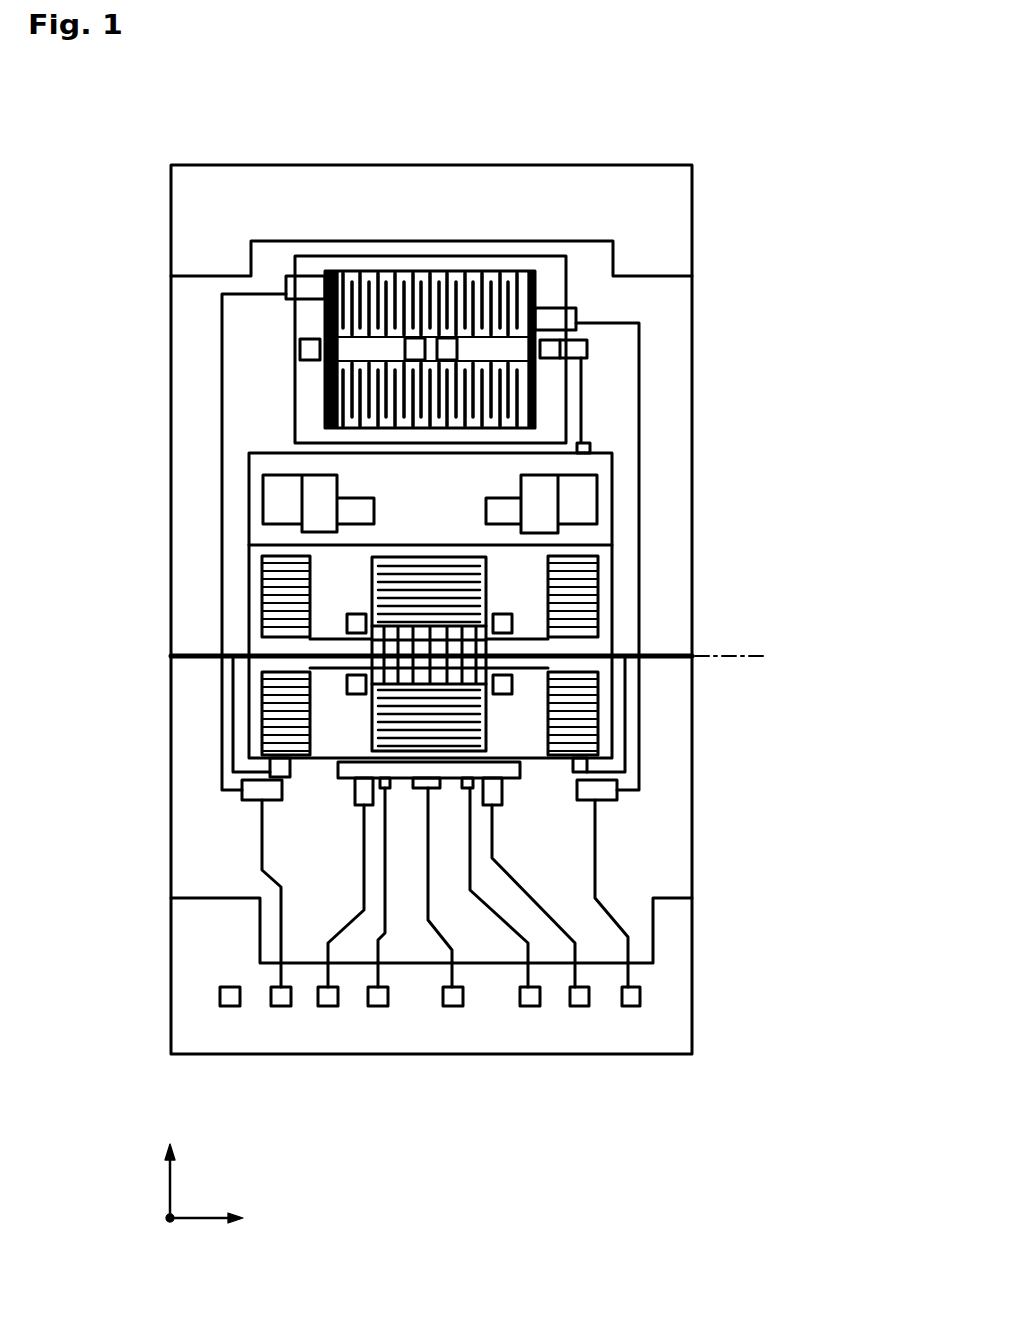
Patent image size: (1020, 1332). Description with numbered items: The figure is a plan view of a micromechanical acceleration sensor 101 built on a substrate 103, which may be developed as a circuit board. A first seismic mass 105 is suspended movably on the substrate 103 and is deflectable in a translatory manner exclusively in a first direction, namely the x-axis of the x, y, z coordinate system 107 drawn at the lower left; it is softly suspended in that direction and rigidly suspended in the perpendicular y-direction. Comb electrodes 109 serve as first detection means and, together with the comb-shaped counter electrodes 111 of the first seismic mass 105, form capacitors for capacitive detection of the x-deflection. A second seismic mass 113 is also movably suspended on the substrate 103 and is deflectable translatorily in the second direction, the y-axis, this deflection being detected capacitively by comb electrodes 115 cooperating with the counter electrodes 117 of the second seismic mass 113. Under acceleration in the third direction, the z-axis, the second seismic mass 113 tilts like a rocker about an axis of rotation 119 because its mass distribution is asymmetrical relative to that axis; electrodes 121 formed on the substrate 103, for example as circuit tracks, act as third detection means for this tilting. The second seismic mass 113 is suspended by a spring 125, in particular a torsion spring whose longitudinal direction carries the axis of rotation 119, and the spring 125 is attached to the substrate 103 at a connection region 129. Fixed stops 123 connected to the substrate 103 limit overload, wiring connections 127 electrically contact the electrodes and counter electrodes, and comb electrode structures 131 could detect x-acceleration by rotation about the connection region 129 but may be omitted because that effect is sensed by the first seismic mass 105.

The micromechanical acceleration sensor 101 is at (718, 181).
The substrate 103 is at (668, 368).
The first seismic mass 105 is at (539, 273).
The x, y, z coordinate system 107 is at (205, 1165).
The comb electrodes 109 is at (378, 275).
The counter electrodes 111 is at (360, 275).
The second seismic mass 113 is at (522, 600).
The comb electrodes 115 is at (498, 690).
The counter electrodes 117 is at (487, 713).
The axis of rotation 119 is at (730, 658).
The electrodes 121 is at (405, 640).
The fixed stops 123 is at (322, 497).
The spring 125 is at (515, 668).
The wiring connections 127 is at (493, 920).
The connection region 129 is at (420, 660).
The comb electrode structures 131 is at (290, 606).